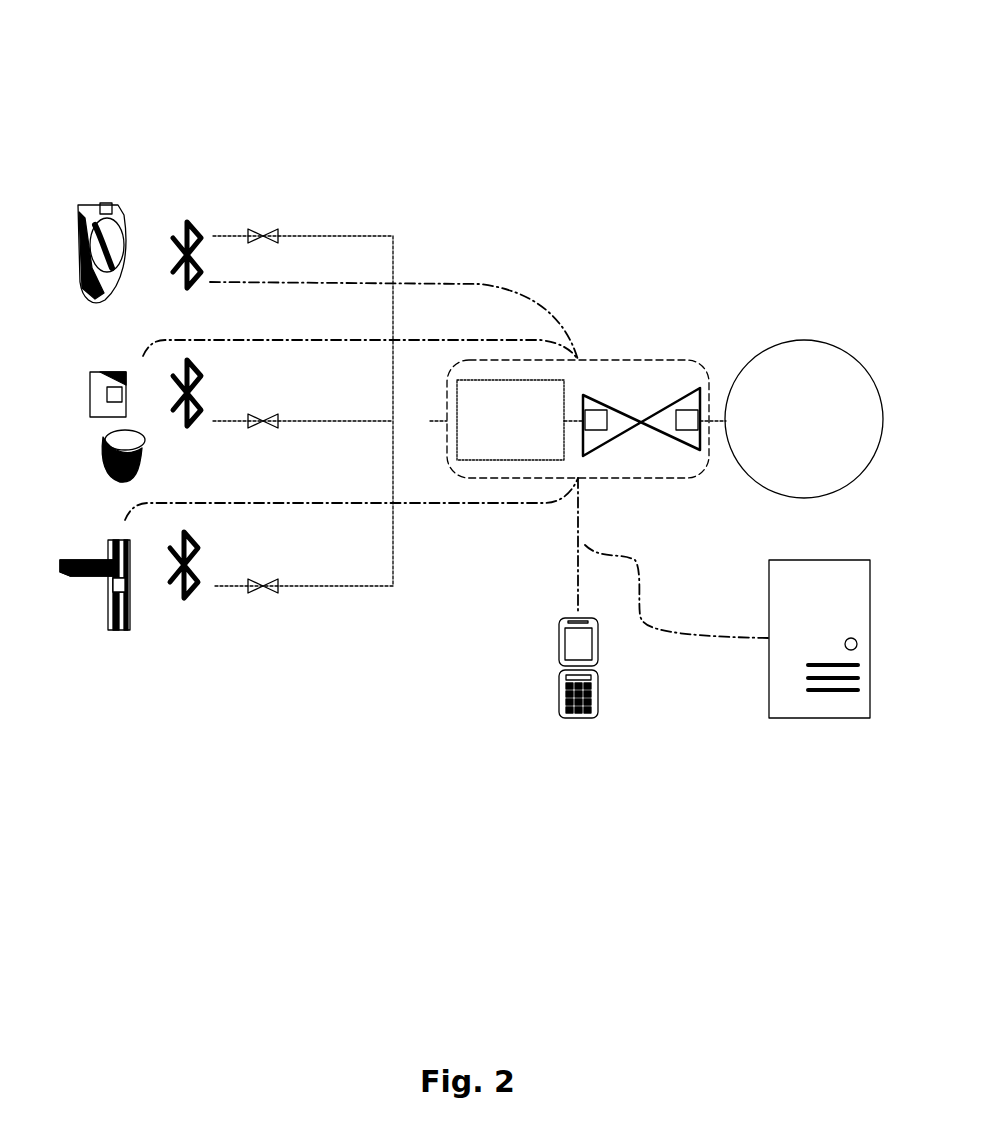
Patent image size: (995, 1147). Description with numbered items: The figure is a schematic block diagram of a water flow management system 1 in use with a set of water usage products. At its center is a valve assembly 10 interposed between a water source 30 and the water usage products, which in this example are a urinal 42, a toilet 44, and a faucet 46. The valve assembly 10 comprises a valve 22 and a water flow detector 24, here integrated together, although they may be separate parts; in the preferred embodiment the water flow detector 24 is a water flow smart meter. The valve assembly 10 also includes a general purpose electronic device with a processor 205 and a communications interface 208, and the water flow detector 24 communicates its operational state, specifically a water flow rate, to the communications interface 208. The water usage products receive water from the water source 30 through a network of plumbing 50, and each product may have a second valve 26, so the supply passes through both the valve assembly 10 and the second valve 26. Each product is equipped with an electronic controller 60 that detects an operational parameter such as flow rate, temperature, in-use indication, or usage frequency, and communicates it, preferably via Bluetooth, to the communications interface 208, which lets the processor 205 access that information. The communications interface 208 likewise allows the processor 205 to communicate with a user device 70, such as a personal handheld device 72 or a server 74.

The water flow management system 1 is at (587, 165).
The valve assembly 10 is at (624, 362).
The valve 22 is at (665, 400).
The water flow detector 24 is at (478, 395).
The second valve 26 is at (252, 229).
The water source 30 is at (840, 378).
The urinal 42 is at (85, 225).
The toilet 44 is at (100, 440).
The faucet 46 is at (108, 618).
The network of plumbing 50 is at (384, 235).
The electronic controller 60 is at (105, 205).
The user device 70 is at (462, 750).
The personal handheld device 72 is at (570, 706).
The server 74 is at (791, 692).
The processor 205 is at (692, 430).
The communications interface 208 is at (610, 430).